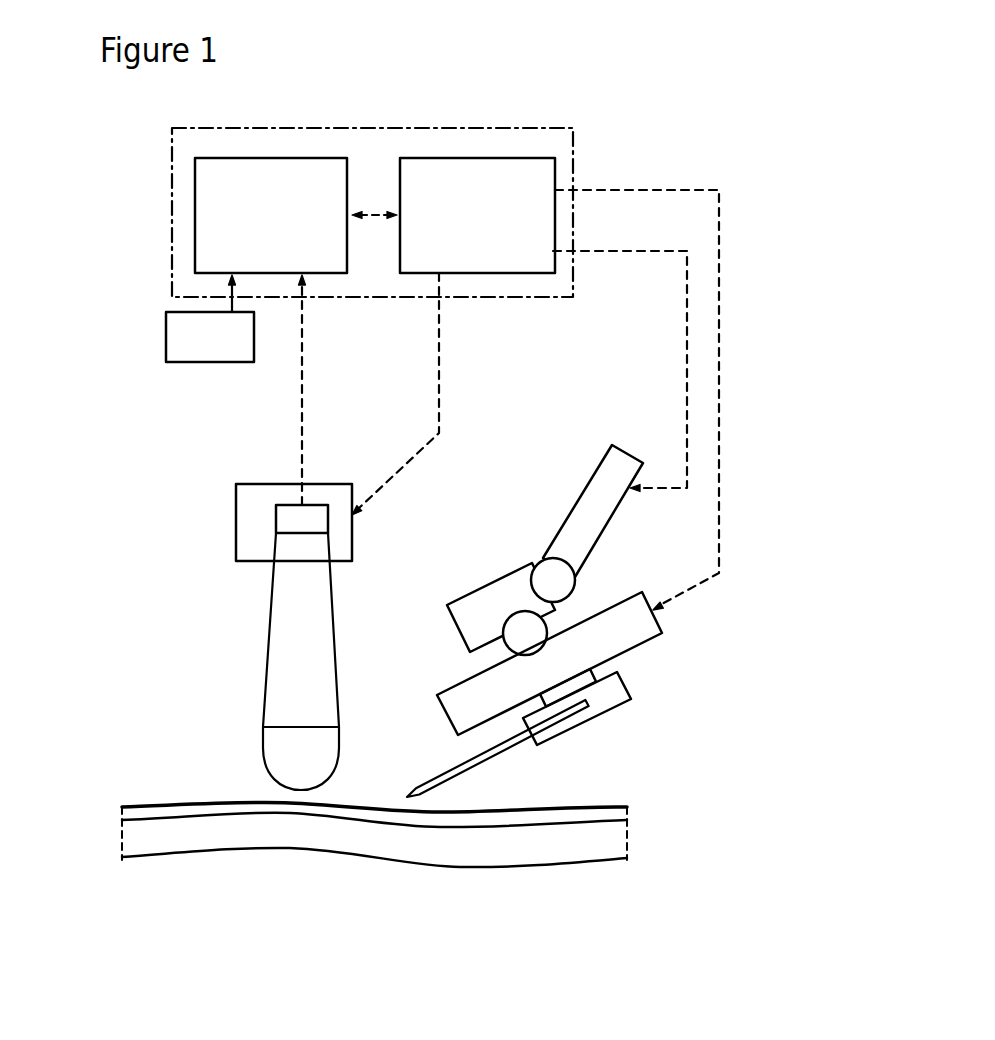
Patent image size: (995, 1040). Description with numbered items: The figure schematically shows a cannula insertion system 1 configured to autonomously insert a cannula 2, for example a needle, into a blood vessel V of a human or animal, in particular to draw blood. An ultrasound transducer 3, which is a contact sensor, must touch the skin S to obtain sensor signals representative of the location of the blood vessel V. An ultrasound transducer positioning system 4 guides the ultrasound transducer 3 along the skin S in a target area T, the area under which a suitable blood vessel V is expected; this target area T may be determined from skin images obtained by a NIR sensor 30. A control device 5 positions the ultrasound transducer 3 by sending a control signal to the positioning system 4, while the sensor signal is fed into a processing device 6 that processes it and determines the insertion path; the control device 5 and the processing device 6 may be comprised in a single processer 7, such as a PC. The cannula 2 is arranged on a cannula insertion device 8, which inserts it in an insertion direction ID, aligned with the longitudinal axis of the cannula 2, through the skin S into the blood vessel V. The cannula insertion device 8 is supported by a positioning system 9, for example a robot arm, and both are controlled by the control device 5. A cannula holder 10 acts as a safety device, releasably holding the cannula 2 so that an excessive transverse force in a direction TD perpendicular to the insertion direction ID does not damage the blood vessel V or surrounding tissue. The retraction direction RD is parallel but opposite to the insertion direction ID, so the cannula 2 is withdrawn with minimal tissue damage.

The cannula insertion system 1 is at (162, 462).
The cannula 2 is at (473, 758).
The ultrasound transducer 3 is at (293, 650).
The ultrasound transducer positioning system 4 is at (253, 490).
The control device 5 is at (515, 180).
The processing device 6 is at (220, 205).
The processer 7 is at (423, 142).
The cannula insertion device 8 is at (617, 627).
The positioning system 9 is at (613, 473).
The cannula holder 10 is at (570, 687).
The NIR sensor 30 is at (192, 325).
The skin S is at (163, 804).
The target area T is at (285, 803).
The blood vessel V is at (352, 857).
The transverse direction TD is at (412, 758).
The insertion direction ID is at (556, 768).
The retraction direction RD is at (653, 670).